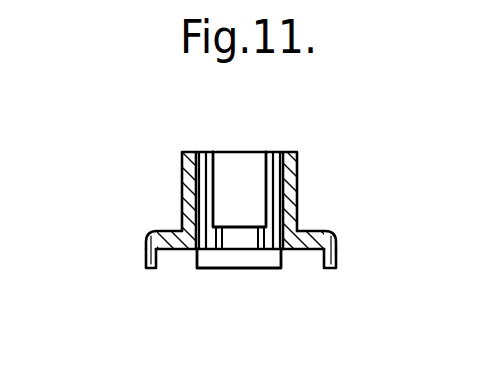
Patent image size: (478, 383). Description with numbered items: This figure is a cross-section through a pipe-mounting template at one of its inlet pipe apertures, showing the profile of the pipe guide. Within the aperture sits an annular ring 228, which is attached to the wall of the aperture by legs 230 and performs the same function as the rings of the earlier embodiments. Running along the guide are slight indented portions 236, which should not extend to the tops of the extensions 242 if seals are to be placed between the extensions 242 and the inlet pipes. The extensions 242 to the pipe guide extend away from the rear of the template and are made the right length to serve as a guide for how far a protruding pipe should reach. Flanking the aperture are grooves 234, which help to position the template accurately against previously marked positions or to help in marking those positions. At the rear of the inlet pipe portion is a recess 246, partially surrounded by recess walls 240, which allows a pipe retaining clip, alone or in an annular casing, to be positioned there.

The annular ring 228 is at (219, 227).
The leg 230 is at (208, 268).
The groove 234 is at (147, 243).
The indented portion 236 is at (279, 172).
The recess wall 240 is at (155, 268).
The extension 242 is at (181, 181).
The recess 246 is at (304, 254).